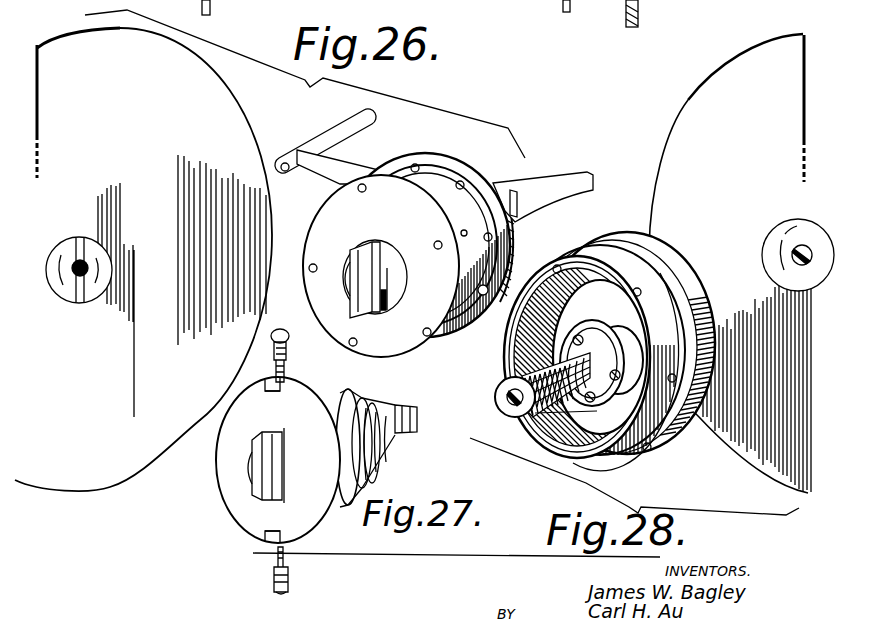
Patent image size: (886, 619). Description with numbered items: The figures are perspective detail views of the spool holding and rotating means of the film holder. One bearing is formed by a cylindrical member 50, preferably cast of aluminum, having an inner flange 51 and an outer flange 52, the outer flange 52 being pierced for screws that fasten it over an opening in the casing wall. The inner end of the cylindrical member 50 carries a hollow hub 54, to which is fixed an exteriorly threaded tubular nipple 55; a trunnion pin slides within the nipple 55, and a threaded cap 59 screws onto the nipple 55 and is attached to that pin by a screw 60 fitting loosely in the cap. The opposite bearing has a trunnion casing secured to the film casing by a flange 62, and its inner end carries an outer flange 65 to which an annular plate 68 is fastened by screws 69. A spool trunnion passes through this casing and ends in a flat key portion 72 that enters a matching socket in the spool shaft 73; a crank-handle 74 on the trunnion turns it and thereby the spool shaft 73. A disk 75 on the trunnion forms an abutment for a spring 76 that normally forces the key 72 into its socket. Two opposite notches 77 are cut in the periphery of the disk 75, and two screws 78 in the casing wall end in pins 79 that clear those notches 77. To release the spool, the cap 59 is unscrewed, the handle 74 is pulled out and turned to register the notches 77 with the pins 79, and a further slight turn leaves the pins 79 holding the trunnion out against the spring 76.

In FIG. 28, the cylindrical member 50 is at (647, 272).
In FIG. 28, the inner flange 51 is at (693, 272).
In FIG. 28, the outer flange 52 is at (648, 457).
In FIG. 28, the hollow hub 54 is at (613, 317).
In FIG. 28, the tubular nipple 55 is at (560, 342).
In FIG. 28, the threaded cap 59 is at (530, 410).
In FIG. 28, the screw 60 is at (577, 398).
In FIG. 26, the flange 62 is at (443, 170).
In FIG. 26, the outer flange 65 is at (467, 268).
In FIG. 28, the outer flange 65 is at (592, 402).
In FIG. 26, the annular plate 68 is at (315, 290).
In FIG. 26, the screws 69 is at (314, 264).
In FIG. 26, the flat key portion 72 is at (385, 262).
In FIG. 27, the flat key portion 72 is at (282, 446).
In FIG. 26, the spool shaft 73 is at (70, 302).
In FIG. 28, the spool shaft 73 is at (788, 283).
In FIG. 26, the crank-handle 74 is at (548, 211).
In FIG. 27, the disk 75 is at (247, 512).
In FIG. 27, the spring 76 is at (358, 398).
In FIG. 27, the notches 77 is at (272, 386).
In FIG. 27, the screws 78 is at (285, 338).
In FIG. 27, the pins 79 is at (285, 366).